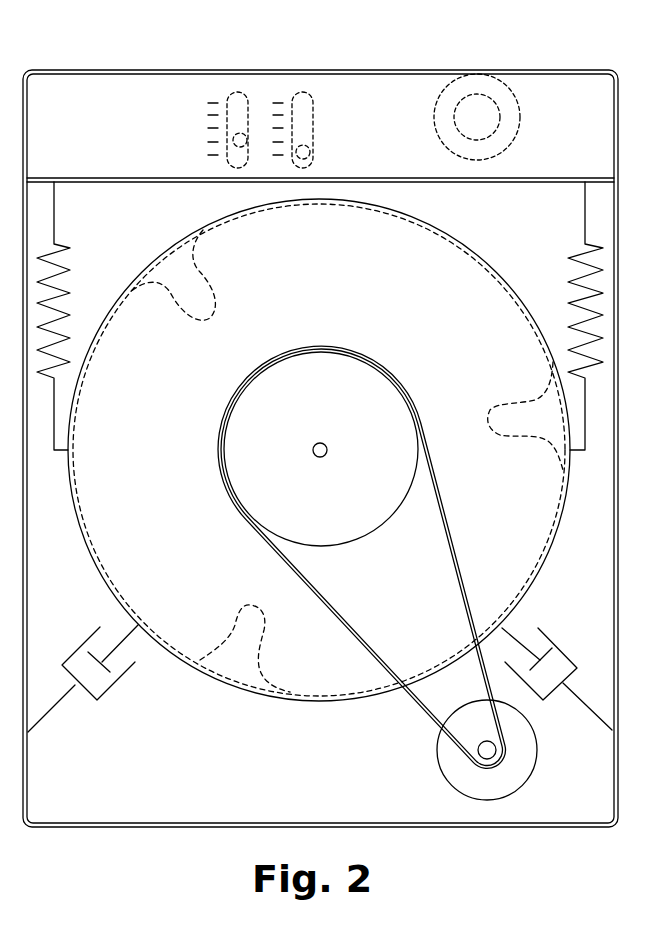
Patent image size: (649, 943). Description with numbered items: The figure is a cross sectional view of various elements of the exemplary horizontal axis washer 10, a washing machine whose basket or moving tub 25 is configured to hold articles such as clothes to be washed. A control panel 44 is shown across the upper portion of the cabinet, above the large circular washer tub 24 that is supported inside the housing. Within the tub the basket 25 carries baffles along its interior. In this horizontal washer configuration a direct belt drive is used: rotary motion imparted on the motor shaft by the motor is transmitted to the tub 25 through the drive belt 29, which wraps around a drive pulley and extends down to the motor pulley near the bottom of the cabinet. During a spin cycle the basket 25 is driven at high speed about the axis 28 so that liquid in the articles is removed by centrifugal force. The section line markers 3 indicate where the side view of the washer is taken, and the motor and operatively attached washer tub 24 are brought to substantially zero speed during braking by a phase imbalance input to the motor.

The washer 10 is at (273, 58).
The control panel 44 is at (125, 139).
The washer tub 24 is at (320, 441).
The basket 25 is at (215, 207).
The axis 28 is at (311, 448).
The drive belt 29 is at (222, 485).
The section line 3- 3 is at (600, 52).